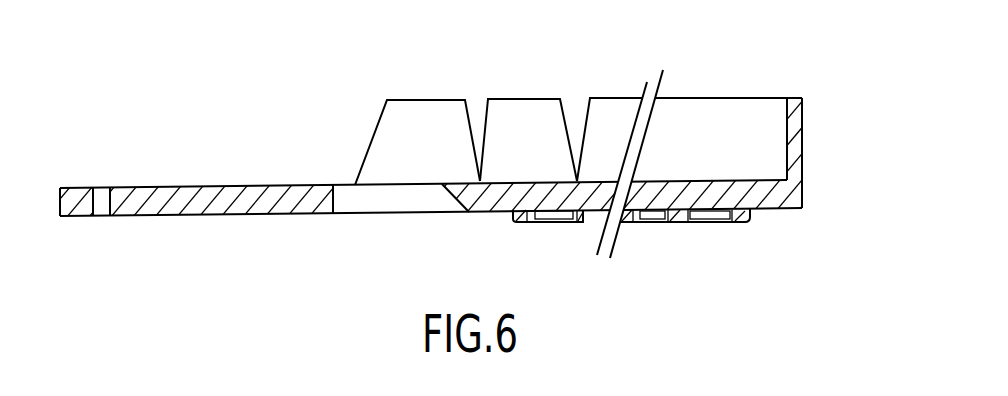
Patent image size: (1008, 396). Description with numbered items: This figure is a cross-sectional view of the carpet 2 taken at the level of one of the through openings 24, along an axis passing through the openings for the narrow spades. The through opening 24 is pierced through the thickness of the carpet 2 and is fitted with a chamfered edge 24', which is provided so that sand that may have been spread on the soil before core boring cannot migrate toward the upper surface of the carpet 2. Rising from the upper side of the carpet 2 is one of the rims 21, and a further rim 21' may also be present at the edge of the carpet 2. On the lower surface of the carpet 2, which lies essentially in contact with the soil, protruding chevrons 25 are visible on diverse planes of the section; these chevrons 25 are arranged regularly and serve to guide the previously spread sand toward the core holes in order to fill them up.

The carpet 2 is at (179, 197).
The rim 21 is at (578, 111).
The rim 21' is at (833, 153).
The through opening 24 is at (340, 231).
The chamfered edge 24' is at (430, 231).
The chevrons 25 is at (570, 223).